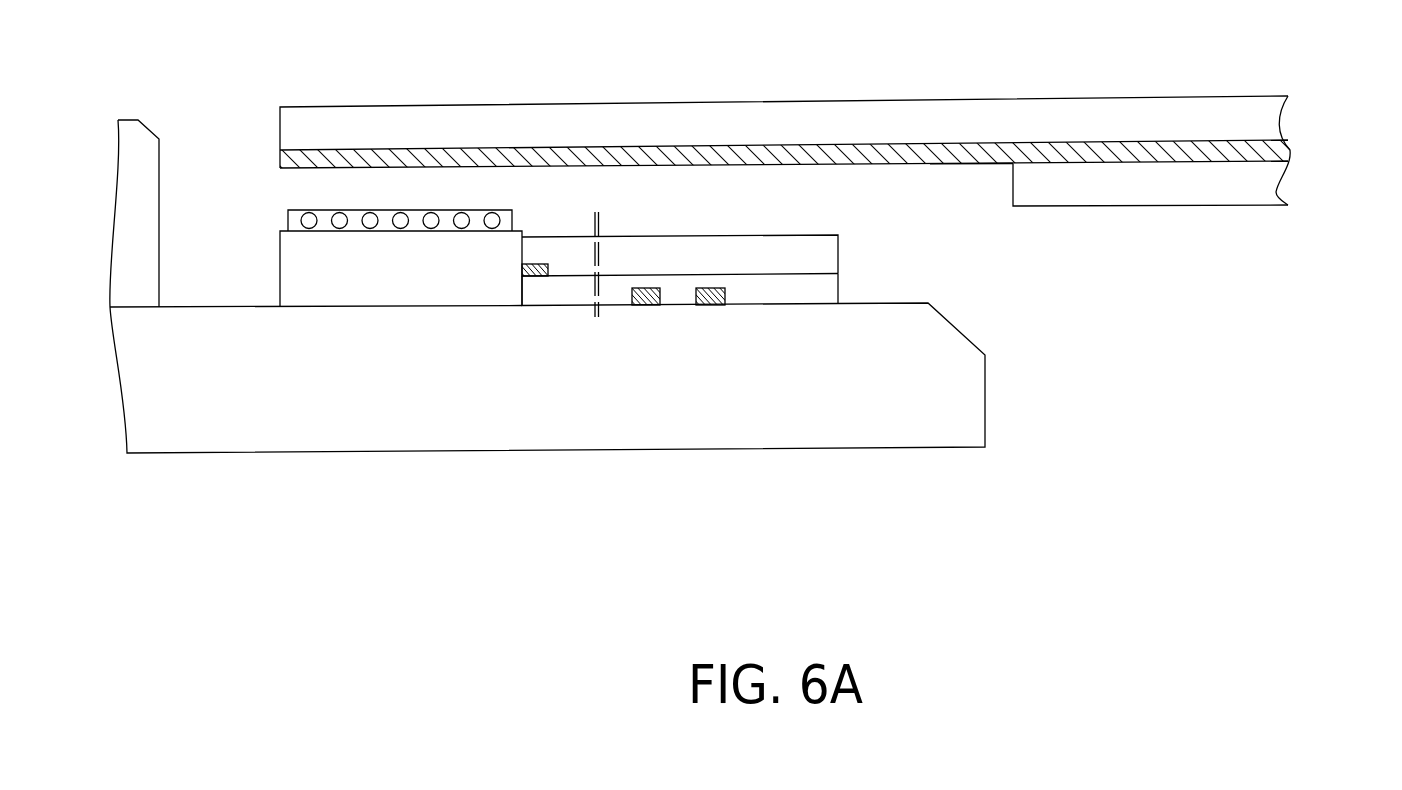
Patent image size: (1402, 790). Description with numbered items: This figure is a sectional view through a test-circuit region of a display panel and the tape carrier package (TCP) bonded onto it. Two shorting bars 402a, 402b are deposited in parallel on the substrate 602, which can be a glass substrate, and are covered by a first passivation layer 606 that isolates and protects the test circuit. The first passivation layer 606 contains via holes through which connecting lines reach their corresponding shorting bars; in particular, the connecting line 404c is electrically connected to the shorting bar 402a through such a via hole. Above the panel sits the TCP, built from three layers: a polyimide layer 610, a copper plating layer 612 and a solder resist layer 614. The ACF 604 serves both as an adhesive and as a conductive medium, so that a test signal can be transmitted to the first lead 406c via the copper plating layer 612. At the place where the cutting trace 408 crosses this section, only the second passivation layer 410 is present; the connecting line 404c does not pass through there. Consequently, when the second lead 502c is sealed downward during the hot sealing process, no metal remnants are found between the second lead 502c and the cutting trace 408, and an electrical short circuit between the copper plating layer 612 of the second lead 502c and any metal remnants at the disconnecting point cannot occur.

The substrate 602 is at (975, 435).
The ACF 604 is at (288, 215).
The first lead 406c is at (291, 261).
The second passivation layer 410 is at (832, 253).
The first passivation layer 606 is at (832, 289).
The connecting line 404c is at (527, 305).
The shorting bar 402a is at (710, 305).
The shorting bar 402b is at (635, 305).
The cutting trace 408 is at (597, 222).
The polyimide layer 610 is at (1273, 124).
The copper plating layer 612 is at (1283, 150).
The solder resist layer 614 is at (1274, 191).
The second lead 502c is at (956, 163).